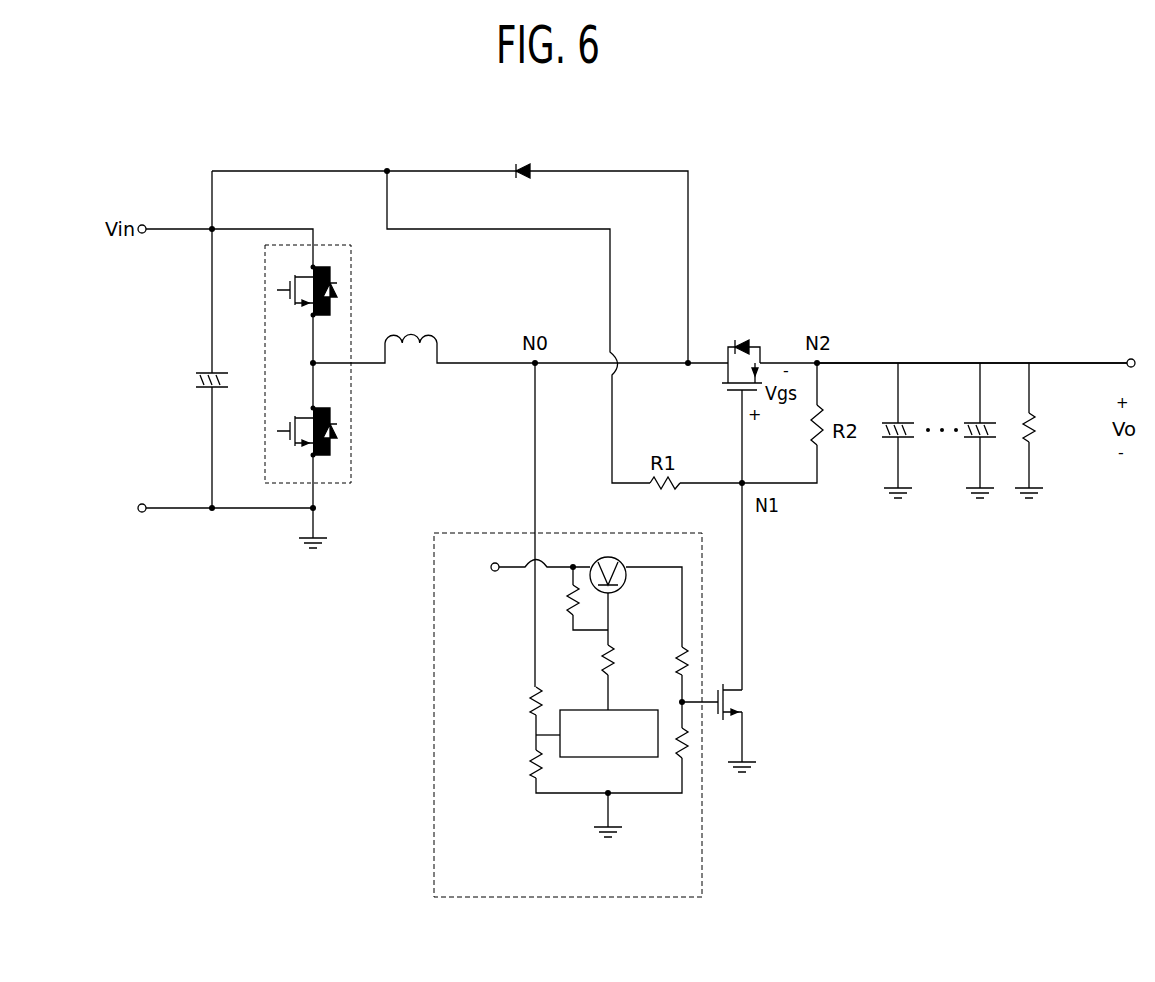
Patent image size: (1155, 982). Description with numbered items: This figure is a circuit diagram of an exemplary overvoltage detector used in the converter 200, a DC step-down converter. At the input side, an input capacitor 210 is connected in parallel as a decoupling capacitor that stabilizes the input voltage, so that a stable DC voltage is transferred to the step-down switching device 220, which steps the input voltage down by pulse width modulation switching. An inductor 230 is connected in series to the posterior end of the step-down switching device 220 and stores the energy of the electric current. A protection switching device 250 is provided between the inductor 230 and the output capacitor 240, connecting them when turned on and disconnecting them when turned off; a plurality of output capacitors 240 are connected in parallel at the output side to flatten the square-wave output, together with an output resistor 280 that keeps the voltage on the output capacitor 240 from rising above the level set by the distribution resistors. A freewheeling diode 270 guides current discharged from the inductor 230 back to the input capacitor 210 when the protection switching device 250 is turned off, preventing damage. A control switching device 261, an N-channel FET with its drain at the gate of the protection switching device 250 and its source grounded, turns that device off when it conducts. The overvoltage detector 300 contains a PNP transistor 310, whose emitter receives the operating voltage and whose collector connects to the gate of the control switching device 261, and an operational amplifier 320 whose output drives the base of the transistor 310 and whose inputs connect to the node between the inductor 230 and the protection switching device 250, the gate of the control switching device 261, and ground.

The converter 200 is at (891, 133).
The input capacitor 210 is at (195, 380).
The step-down switching device 220 is at (351, 483).
The inductor 230 is at (412, 338).
The output capacitor 240 is at (886, 420).
The protection switching device 250 is at (740, 345).
The control switching device 261 is at (746, 700).
The freewheeling diode 270 is at (522, 165).
The output resistor 280 is at (1040, 430).
The overvoltage detector 300 is at (522, 630).
The transistor 310 is at (600, 558).
The operational amplifier 320 is at (578, 758).